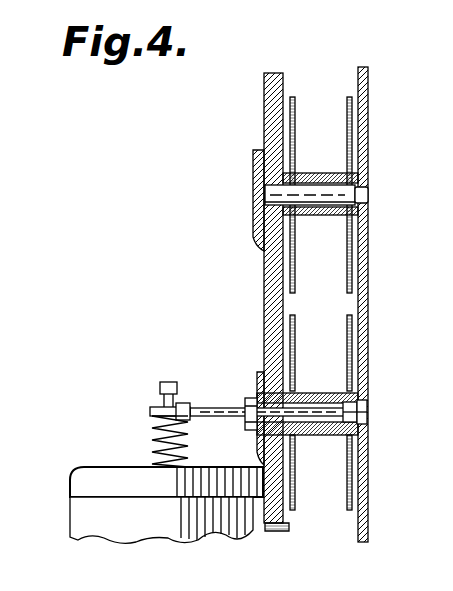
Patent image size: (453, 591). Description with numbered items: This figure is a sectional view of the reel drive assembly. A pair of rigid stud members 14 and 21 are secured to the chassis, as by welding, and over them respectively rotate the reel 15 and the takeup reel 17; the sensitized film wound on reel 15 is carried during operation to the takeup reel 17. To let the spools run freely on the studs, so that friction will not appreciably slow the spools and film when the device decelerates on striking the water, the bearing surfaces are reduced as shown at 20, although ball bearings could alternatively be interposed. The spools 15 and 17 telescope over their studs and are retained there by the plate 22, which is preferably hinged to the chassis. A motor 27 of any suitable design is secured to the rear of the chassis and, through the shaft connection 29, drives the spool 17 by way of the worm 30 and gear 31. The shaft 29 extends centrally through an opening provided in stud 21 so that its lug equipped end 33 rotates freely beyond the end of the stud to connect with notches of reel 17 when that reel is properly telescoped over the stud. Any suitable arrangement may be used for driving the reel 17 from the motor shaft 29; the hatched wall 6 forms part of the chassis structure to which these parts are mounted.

The housing wall 6 is at (263, 292).
The rigid stud member 14 is at (266, 192).
The reel 15 is at (346, 264).
The takeup reel 17 is at (347, 500).
The reduced bearing surface 20 is at (316, 179).
The rigid stud member 21 is at (312, 433).
The plate 22 is at (368, 296).
The motor 27 is at (172, 535).
The shaft connection 29 is at (230, 400).
The worm 30 is at (190, 440).
The gear 31 is at (175, 400).
The lug equipped end 33 is at (367, 411).